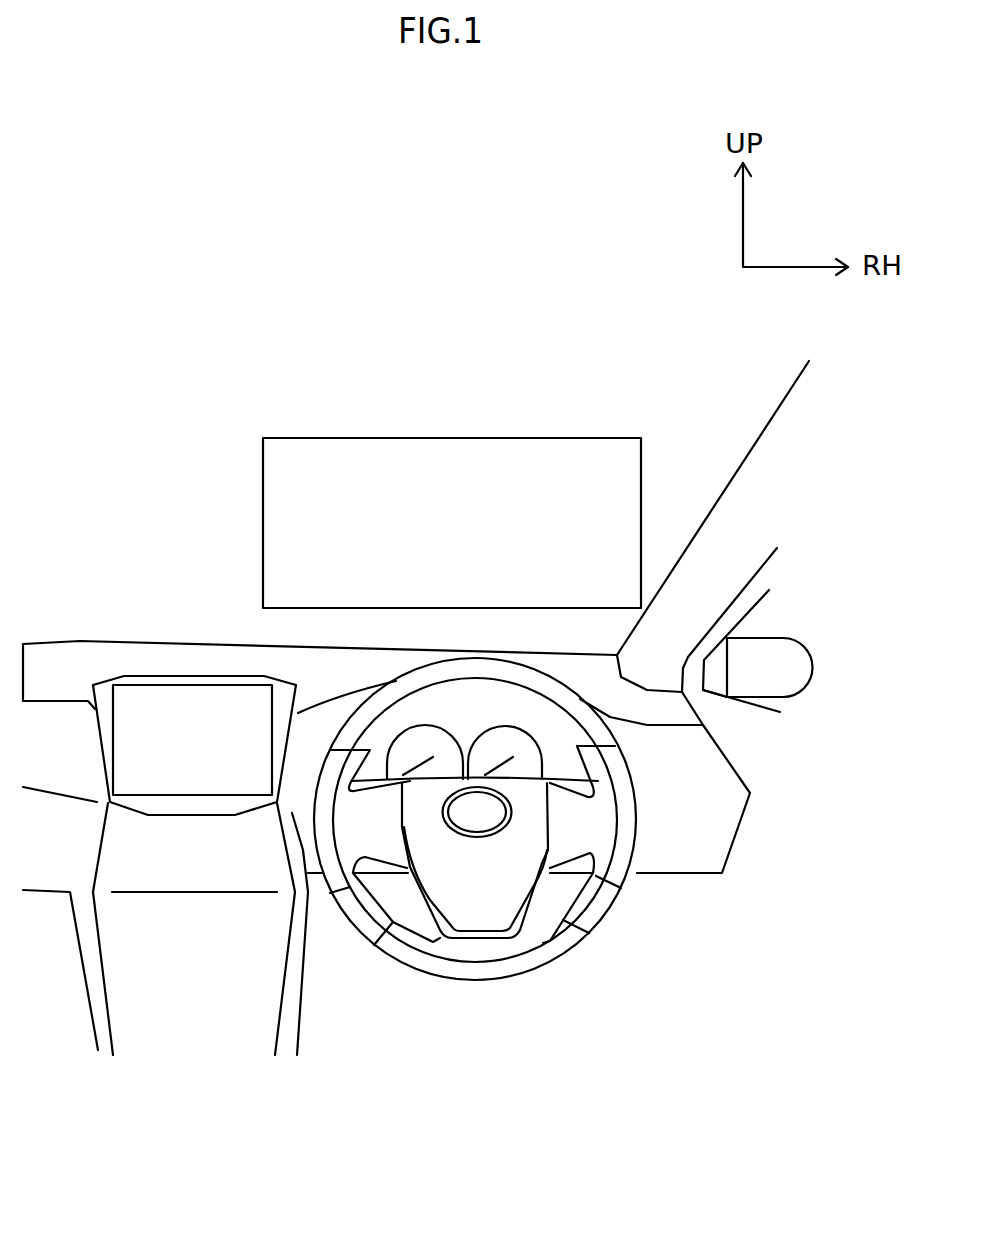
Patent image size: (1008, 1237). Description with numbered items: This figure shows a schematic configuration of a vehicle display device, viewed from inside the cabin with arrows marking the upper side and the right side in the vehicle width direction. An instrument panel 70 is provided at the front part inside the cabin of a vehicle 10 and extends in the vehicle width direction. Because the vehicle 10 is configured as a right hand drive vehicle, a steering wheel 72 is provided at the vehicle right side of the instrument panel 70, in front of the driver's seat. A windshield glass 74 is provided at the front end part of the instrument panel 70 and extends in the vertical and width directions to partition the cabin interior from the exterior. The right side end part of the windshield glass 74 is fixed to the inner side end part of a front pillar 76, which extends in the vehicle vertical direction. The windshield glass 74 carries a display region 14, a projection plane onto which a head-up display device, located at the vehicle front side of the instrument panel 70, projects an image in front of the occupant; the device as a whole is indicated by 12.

The vehicle 10 is at (555, 273).
The display device 12 is at (303, 382).
The display region 14 is at (398, 437).
The instrument panel 70 is at (673, 867).
The steering wheel 72 is at (632, 787).
The windshield glass 74 is at (710, 488).
The front pillar 76 is at (773, 417).